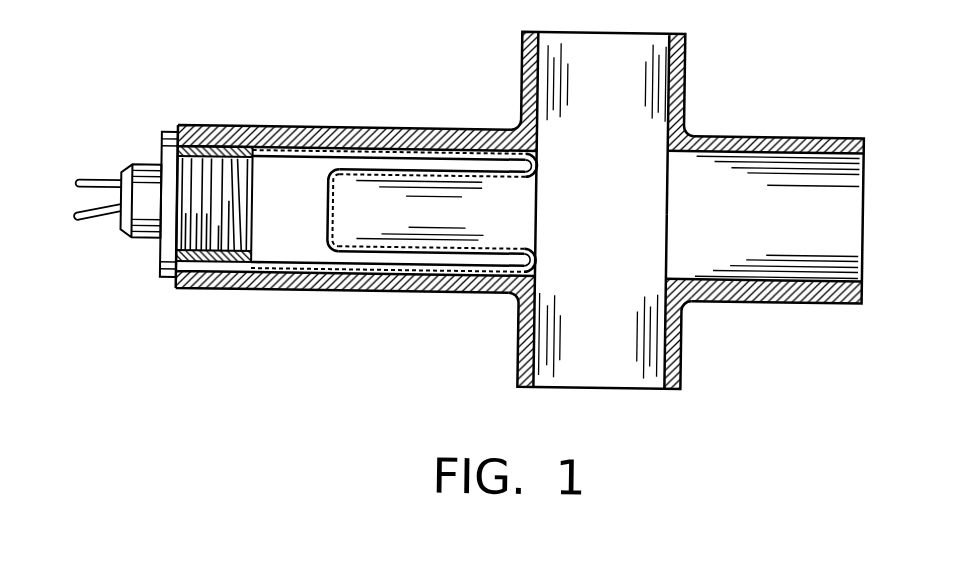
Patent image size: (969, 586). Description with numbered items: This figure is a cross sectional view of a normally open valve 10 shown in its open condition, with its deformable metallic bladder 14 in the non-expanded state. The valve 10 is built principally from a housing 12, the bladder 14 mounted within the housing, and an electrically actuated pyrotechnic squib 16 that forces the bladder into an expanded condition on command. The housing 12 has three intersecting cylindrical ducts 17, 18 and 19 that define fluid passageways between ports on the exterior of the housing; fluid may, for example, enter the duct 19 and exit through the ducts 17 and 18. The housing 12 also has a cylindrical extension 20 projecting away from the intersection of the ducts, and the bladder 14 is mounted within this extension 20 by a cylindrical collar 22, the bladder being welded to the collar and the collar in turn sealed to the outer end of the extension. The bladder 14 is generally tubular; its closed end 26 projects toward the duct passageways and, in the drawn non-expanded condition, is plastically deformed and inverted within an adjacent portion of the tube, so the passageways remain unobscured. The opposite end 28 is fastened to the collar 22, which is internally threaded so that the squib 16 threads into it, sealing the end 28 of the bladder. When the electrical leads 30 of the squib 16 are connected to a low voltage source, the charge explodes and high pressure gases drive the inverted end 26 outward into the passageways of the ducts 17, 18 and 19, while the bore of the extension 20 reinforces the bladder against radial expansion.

The valve 10 is at (381, 49).
The housing 12 is at (346, 123).
The deformable metallic bladder 14 is at (270, 145).
The pyrotechnic squib 16 is at (144, 163).
The duct 17 is at (687, 70).
The duct 18 is at (683, 348).
The duct 19 is at (756, 128).
The cylindrical extension 20 is at (429, 124).
The cylindrical collar 22 is at (186, 130).
The closed end of bladder 26 is at (346, 241).
The opposite end of bladder 28 is at (257, 261).
The electrical leads 30 is at (75, 210).